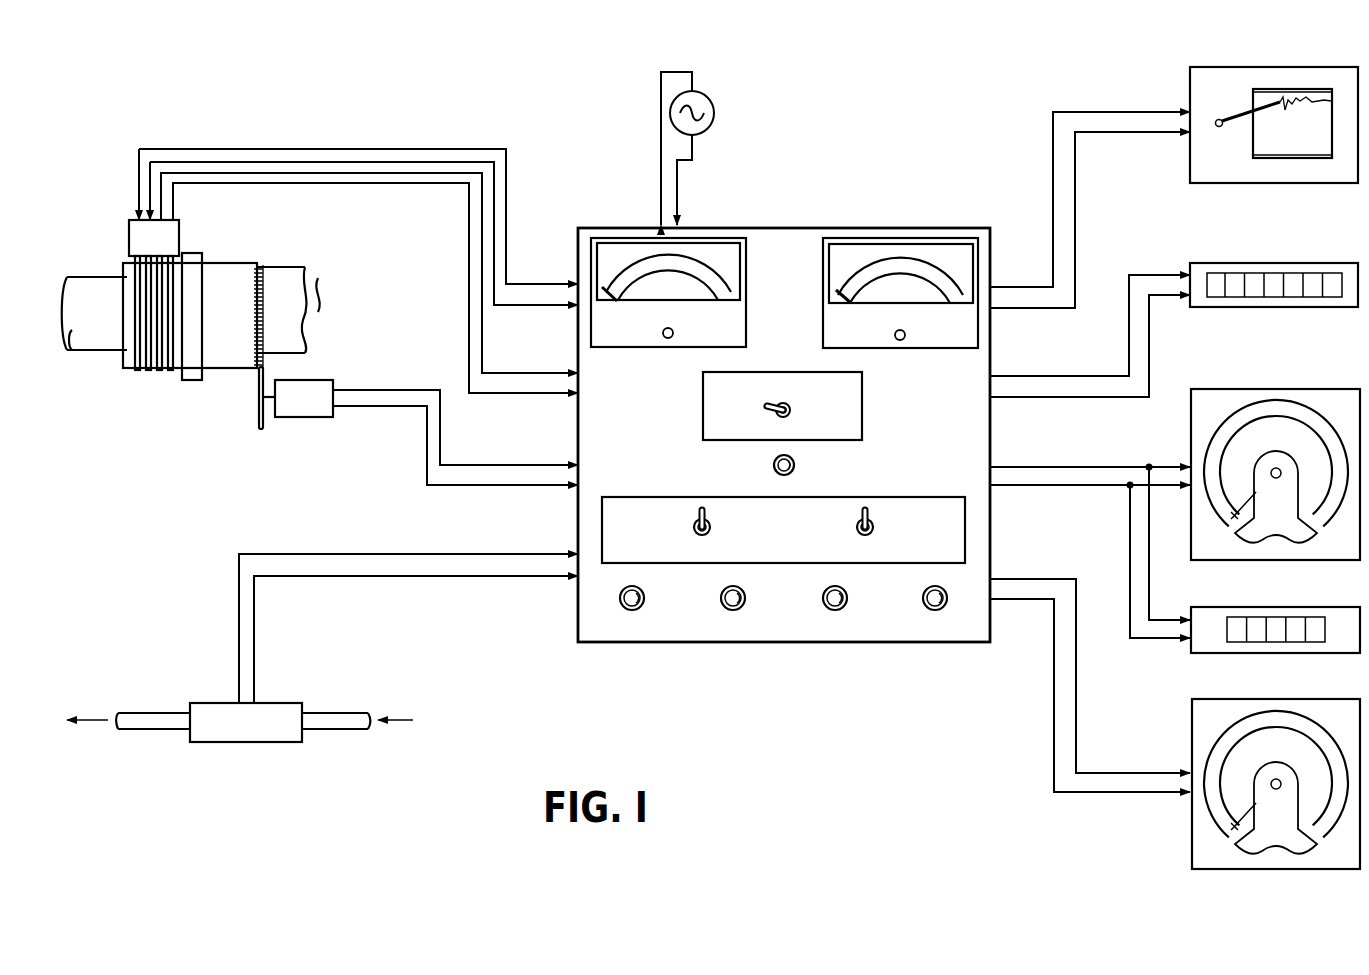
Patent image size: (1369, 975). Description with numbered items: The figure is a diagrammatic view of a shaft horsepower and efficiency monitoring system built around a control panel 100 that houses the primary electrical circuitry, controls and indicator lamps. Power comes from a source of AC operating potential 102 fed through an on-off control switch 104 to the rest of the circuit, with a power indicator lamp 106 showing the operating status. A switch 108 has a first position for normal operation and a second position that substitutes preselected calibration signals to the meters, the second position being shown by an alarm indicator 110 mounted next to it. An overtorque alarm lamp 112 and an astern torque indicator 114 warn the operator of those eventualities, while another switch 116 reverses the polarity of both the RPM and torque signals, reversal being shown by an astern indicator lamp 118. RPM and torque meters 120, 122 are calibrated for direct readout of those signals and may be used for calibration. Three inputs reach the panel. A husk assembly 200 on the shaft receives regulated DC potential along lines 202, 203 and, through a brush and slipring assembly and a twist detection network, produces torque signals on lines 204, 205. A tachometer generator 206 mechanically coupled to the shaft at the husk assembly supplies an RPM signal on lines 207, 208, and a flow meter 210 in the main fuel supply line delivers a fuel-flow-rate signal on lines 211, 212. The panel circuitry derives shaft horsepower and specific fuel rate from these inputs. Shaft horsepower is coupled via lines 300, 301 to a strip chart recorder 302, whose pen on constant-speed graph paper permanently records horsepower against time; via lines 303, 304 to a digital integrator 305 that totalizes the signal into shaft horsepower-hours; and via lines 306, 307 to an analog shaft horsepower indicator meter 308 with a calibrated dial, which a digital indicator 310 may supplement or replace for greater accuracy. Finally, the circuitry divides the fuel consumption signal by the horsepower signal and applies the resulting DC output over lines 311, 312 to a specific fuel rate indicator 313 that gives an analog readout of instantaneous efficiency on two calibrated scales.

The control panel 100 is at (575, 628).
The source of AC operating potential 102 is at (698, 137).
The on-off control switch 104 is at (702, 507).
The power indicator lamp 106 is at (736, 611).
The switch 108 is at (865, 508).
The alarm indicator 110 is at (838, 611).
The overtorque alarm lamp 112 is at (632, 611).
The astern torque indicator 114 is at (936, 611).
The switch 116 is at (789, 400).
The astern indicator lamp 118 is at (795, 463).
The RPM meter 120 is at (746, 276).
The torque meter 122 is at (823, 276).
The husk assembly 200 is at (122, 268).
The line 202 is at (267, 148).
The line 203 is at (315, 161).
The line 204 is at (362, 172).
The line 205 is at (409, 182).
The tachometer generator 206 is at (327, 422).
The line 207 is at (536, 462).
The line 208 is at (540, 488).
The flow meter 210 is at (294, 701).
The line 211 is at (530, 555).
The line 212 is at (534, 581).
The line 300 is at (1052, 308).
The line 301 is at (1050, 285).
The strip chart recorder 302 is at (1229, 66).
The line 303 is at (1056, 398).
The line 304 is at (1055, 376).
The digital integrator 305 is at (1230, 262).
The line 306 is at (1056, 487).
The line 307 is at (1055, 466).
The analog shaft horsepower indicator meter 308 is at (1231, 388).
The digital indicator 310 is at (1234, 607).
The line 311 is at (1052, 600).
The line 312 is at (1051, 577).
The specific fuel rate indicator 313 is at (1234, 698).